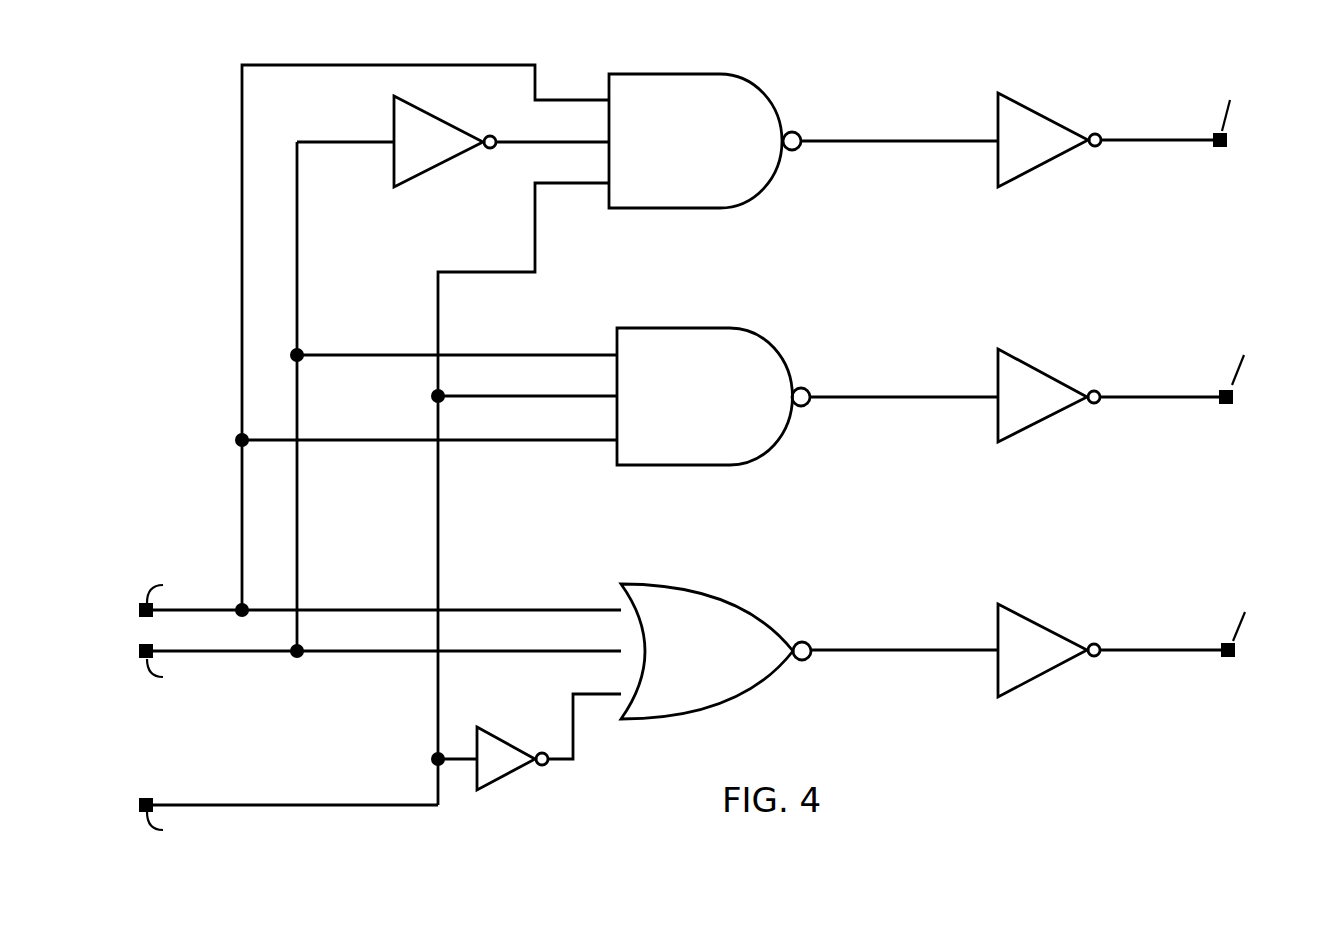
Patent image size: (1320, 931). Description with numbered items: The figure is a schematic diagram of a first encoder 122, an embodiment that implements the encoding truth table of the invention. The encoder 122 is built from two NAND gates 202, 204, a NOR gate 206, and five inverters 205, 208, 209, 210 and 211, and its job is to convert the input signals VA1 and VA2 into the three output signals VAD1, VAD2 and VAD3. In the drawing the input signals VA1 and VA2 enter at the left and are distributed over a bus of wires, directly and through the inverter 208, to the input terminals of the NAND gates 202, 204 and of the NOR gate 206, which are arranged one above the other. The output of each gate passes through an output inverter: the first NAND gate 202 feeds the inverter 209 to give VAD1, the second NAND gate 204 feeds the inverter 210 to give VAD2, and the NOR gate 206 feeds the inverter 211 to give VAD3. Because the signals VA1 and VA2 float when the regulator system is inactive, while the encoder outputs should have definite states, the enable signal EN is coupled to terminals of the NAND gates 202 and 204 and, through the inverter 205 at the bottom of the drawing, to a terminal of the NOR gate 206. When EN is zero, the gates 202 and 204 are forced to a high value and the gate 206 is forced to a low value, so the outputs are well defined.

The encoder 122 is at (187, 431).
The NAND gate 202 is at (757, 86).
The NAND gate 204 is at (775, 348).
The NOR gate 206 is at (742, 604).
The inverter 208 is at (430, 173).
The inverter 209 is at (1045, 165).
The inverter 210 is at (1035, 425).
The inverter 211 is at (1043, 678).
The inverter 205 is at (497, 780).